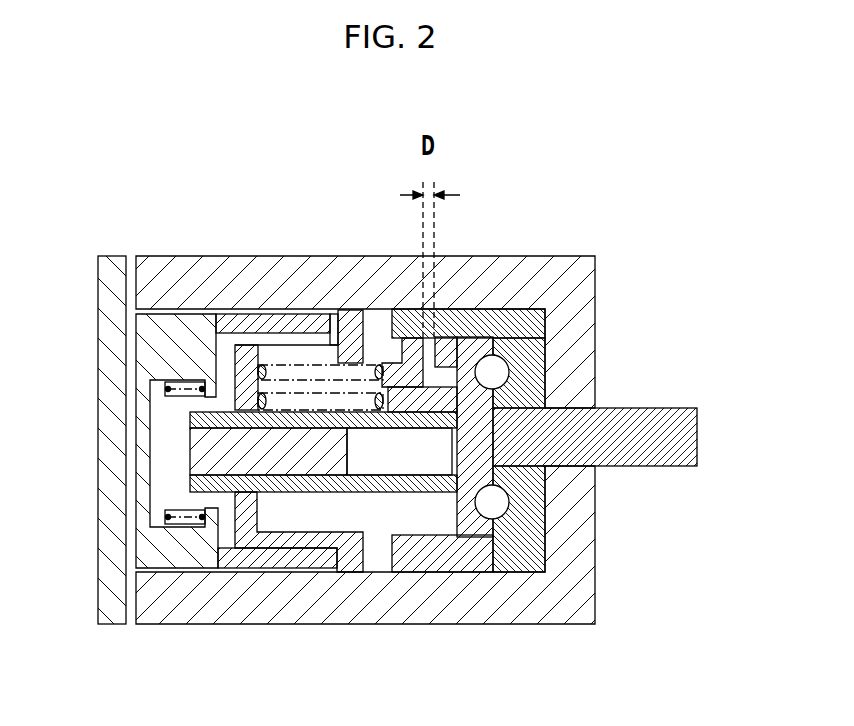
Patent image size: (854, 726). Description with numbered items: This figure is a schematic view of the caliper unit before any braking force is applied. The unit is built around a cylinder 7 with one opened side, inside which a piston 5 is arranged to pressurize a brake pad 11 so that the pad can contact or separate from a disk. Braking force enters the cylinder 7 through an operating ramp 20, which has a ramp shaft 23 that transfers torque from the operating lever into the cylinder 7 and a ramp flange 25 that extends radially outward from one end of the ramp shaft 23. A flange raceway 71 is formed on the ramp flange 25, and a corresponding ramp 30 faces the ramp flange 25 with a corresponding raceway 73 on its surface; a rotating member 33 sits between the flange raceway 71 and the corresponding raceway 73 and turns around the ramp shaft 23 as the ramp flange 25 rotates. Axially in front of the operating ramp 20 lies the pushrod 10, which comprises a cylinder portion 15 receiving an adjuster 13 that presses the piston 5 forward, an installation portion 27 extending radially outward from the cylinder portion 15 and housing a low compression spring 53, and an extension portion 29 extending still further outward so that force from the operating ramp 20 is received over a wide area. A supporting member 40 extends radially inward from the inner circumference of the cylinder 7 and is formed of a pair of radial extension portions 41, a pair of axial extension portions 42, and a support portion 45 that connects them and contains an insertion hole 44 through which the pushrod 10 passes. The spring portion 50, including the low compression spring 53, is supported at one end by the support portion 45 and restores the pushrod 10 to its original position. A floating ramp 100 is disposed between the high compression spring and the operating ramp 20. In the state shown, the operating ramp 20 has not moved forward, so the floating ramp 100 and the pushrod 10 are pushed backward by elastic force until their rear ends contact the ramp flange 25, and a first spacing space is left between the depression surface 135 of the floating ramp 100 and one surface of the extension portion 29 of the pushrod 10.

The piston 5 is at (178, 555).
The cylinder 7 is at (371, 409).
The pushrod 10 is at (419, 505).
The brake pad 11 is at (100, 437).
The adjuster 13 is at (172, 437).
The cylinder portion 15 is at (300, 490).
The operating ramp 20 is at (622, 405).
The ramp shaft 23 is at (683, 437).
The ramp flange 25 is at (483, 575).
The installation portion 27 is at (390, 365).
The extension portion 29 is at (446, 345).
The corresponding ramp 30 is at (565, 300).
The rotating member 33 is at (520, 522).
The supporting member 40 is at (369, 345).
The radial extension portions 41 is at (345, 335).
The axial extension portions 42 is at (290, 325).
The insertion hole 44 is at (248, 548).
The support portion 45 is at (246, 372).
The spring portion 50 is at (333, 420).
The low compression spring 53 is at (365, 437).
The flange raceway 71 is at (488, 325).
The corresponding raceway 73 is at (520, 350).
The floating ramp 100 is at (444, 336).
The depression surface 135 is at (520, 478).